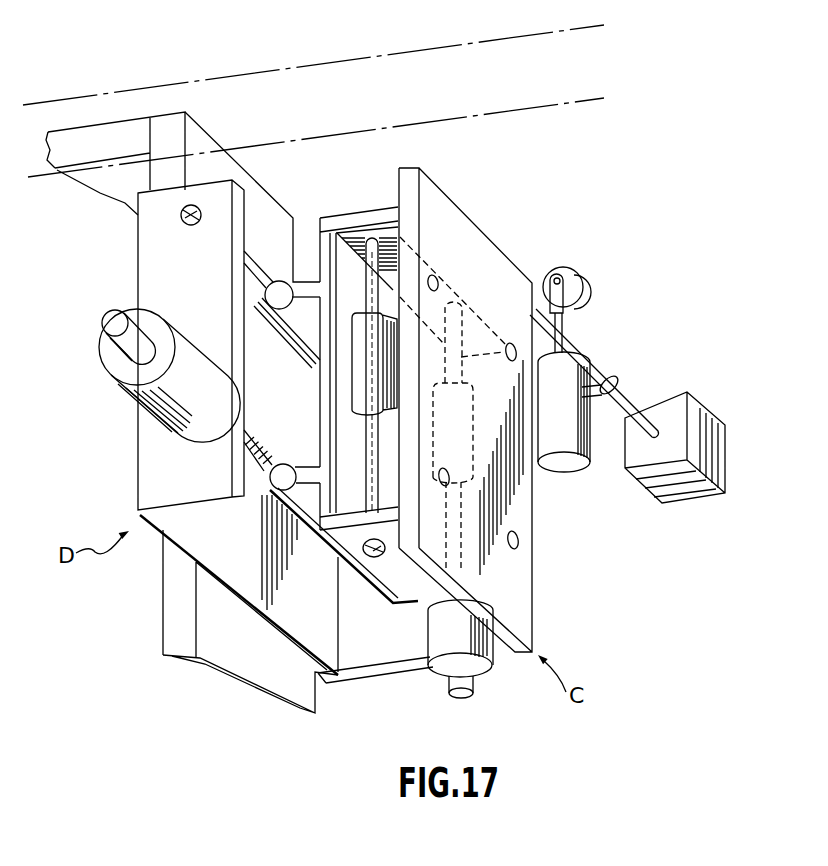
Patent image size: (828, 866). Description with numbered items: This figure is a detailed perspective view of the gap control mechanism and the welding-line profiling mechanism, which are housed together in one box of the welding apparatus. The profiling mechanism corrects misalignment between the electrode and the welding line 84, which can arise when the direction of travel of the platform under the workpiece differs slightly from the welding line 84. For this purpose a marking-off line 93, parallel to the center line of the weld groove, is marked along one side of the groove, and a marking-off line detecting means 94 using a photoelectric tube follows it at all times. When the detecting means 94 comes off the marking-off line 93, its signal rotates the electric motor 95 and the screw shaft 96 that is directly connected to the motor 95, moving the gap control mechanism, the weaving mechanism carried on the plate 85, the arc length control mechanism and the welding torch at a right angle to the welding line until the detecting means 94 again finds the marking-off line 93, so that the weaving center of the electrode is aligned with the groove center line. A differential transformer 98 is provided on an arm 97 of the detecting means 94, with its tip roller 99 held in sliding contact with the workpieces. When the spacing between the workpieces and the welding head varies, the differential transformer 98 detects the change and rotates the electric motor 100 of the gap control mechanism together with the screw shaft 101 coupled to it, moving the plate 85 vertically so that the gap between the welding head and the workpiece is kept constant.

The welding line 84 is at (318, 62).
The marking-off line 93 is at (516, 108).
The plate 85 is at (523, 584).
The marking-off line detecting means 94 is at (700, 412).
The electric motor 95 is at (189, 346).
The screw shaft 96 is at (250, 441).
The arm 97 is at (624, 400).
The differential transformer 98 is at (581, 463).
The roller 99 is at (551, 268).
The electric motor 100 is at (482, 668).
The screw shaft 101 is at (464, 328).